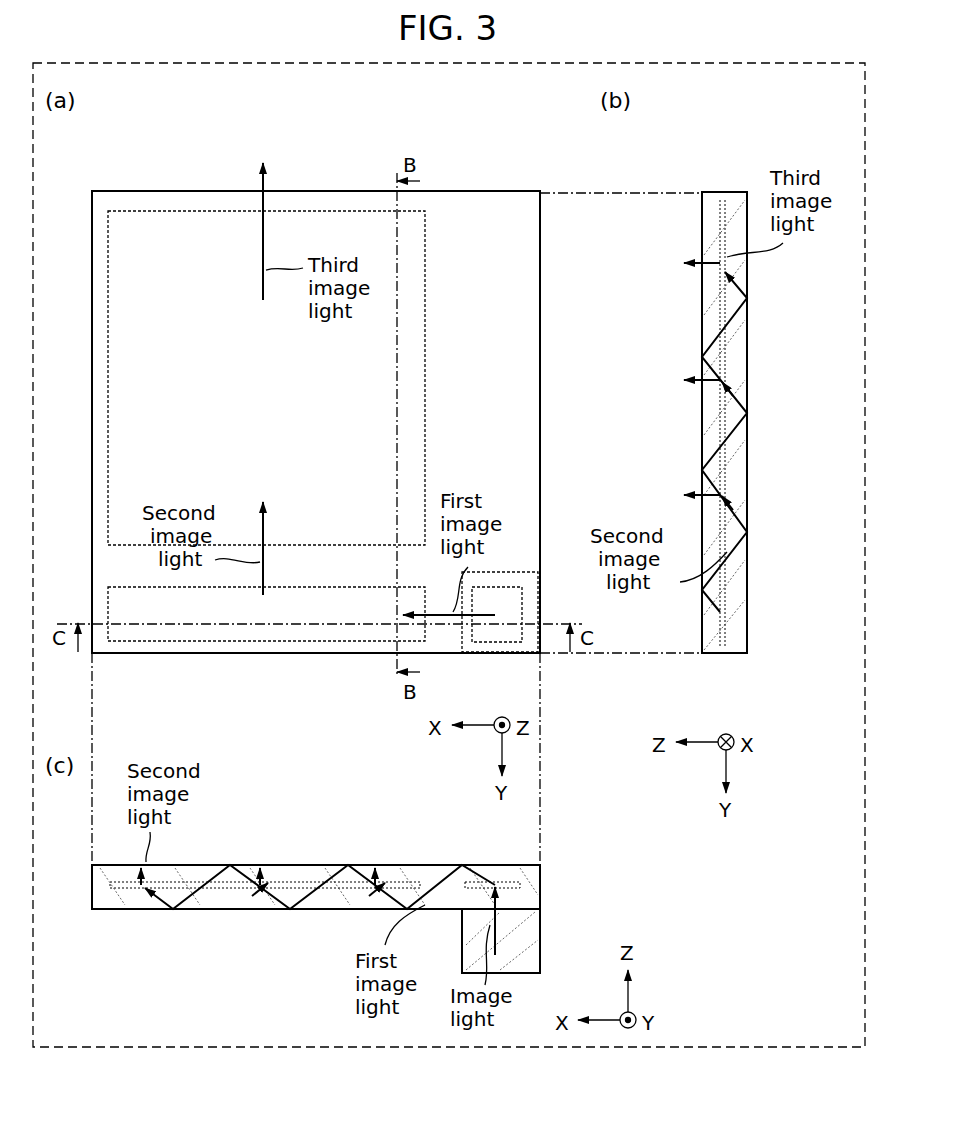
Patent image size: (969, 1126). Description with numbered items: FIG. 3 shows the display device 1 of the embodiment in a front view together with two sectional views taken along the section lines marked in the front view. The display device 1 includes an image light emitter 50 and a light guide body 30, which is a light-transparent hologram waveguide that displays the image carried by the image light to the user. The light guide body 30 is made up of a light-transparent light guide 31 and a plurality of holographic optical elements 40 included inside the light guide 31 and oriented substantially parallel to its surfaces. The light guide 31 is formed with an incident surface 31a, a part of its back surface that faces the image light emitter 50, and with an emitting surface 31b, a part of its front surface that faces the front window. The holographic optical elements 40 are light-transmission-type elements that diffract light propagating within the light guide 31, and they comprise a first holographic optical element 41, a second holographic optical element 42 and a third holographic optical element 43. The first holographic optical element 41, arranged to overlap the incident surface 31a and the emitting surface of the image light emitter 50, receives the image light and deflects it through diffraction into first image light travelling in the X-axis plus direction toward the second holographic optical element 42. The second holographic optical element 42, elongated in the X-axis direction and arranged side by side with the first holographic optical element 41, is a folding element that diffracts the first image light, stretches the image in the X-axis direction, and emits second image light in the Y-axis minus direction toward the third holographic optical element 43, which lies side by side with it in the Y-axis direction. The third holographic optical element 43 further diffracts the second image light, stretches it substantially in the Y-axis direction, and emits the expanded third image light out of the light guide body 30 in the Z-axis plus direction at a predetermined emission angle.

The display device 1 is at (512, 160).
The light guide body 30 is at (543, 326).
The light guide 31 is at (530, 367).
The incident surface 31a is at (505, 915).
The emitting surface 31b is at (172, 242).
The holographic optical elements 40 is at (473, 552).
The first holographic optical element 41 is at (462, 640).
The second holographic optical element 42 is at (272, 645).
The third holographic optical element 43 is at (341, 207).
The image light emitter 50 is at (542, 578).